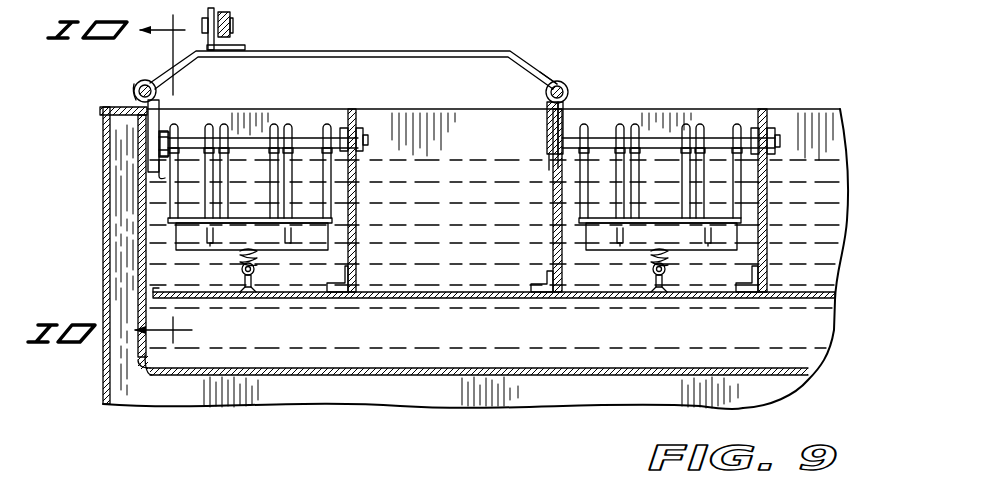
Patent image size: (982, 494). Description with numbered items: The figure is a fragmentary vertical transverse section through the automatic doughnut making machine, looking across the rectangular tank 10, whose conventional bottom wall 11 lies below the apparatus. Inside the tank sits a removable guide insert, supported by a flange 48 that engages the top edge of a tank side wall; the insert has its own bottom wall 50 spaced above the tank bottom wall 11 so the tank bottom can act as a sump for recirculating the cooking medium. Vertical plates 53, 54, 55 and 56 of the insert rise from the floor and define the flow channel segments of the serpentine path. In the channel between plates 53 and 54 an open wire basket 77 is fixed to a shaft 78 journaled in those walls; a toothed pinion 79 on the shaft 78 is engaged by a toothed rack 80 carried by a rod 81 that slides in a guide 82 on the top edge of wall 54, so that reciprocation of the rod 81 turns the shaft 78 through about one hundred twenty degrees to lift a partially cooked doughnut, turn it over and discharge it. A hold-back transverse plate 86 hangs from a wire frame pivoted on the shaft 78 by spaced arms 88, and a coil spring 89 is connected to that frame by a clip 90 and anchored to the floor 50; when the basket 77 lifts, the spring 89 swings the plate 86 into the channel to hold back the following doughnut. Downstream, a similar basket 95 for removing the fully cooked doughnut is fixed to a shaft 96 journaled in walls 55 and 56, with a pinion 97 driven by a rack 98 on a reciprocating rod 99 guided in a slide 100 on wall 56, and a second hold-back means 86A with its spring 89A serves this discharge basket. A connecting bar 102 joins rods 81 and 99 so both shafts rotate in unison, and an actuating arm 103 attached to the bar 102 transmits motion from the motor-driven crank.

The tank 10 is at (98, 380).
The bottom wall 11 is at (348, 372).
The flange 48 is at (122, 100).
The bottom wall 50 is at (477, 298).
The vertical plate 53 is at (770, 256).
The vertical plate 54 is at (552, 265).
The vertical plate 55 is at (353, 270).
The vertical plate 56 is at (137, 248).
The wire basket 77 is at (742, 205).
The shaft 78 is at (716, 138).
The toothed pinion 79 is at (546, 168).
The toothed rack 80 is at (546, 112).
The rod 81 is at (568, 88).
The guide 82 is at (545, 92).
The transverse plate 86 is at (711, 240).
The hold-back means 86A is at (276, 240).
The arm 88 is at (705, 185).
The coil spring 89 is at (654, 276).
The coil spring 89A is at (246, 276).
The clip 90 is at (665, 280).
The basket means 95 is at (330, 196).
The shaft 96 is at (338, 134).
The pinion 97 is at (155, 172).
The rack 98 is at (163, 107).
The reciprocating rod 99 is at (137, 80).
The slide 100 is at (133, 92).
The connecting bar 102 is at (322, 47).
The actuating arm 103 is at (228, 18).